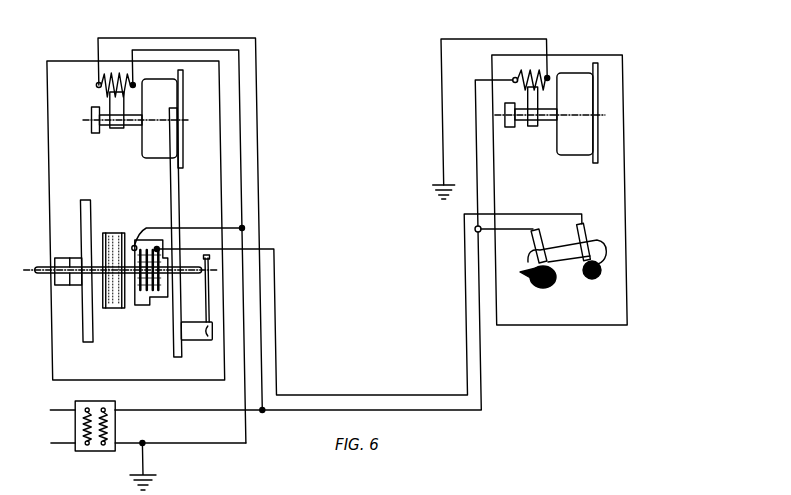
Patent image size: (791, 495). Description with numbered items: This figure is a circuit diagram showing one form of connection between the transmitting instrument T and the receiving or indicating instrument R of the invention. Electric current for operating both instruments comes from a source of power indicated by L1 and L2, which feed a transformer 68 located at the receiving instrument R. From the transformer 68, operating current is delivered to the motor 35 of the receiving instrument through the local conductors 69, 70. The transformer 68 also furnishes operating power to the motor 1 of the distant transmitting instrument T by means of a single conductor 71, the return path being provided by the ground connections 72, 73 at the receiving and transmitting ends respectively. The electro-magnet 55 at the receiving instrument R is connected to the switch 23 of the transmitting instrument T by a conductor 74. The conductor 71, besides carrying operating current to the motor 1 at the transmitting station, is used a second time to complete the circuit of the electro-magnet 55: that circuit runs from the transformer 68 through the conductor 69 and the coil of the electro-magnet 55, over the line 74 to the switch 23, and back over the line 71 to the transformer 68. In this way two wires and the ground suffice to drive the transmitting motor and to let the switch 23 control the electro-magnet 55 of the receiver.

The motor 1 is at (582, 82).
The switch 23 is at (572, 265).
The motor 35 is at (168, 88).
The electro-magnet 55 is at (149, 298).
The transformer 68 is at (113, 430).
The local conductor 69 is at (247, 236).
The local conductor 70 is at (258, 127).
The conductor 71 is at (484, 393).
The ground connection 72 is at (143, 460).
The ground connection 73 is at (442, 90).
The conductor 74 is at (308, 395).
The receiving instrument R is at (55, 172).
The transmitting instrument T is at (615, 172).
The source of power L1 is at (55, 410).
The source of power L2 is at (140, 443).